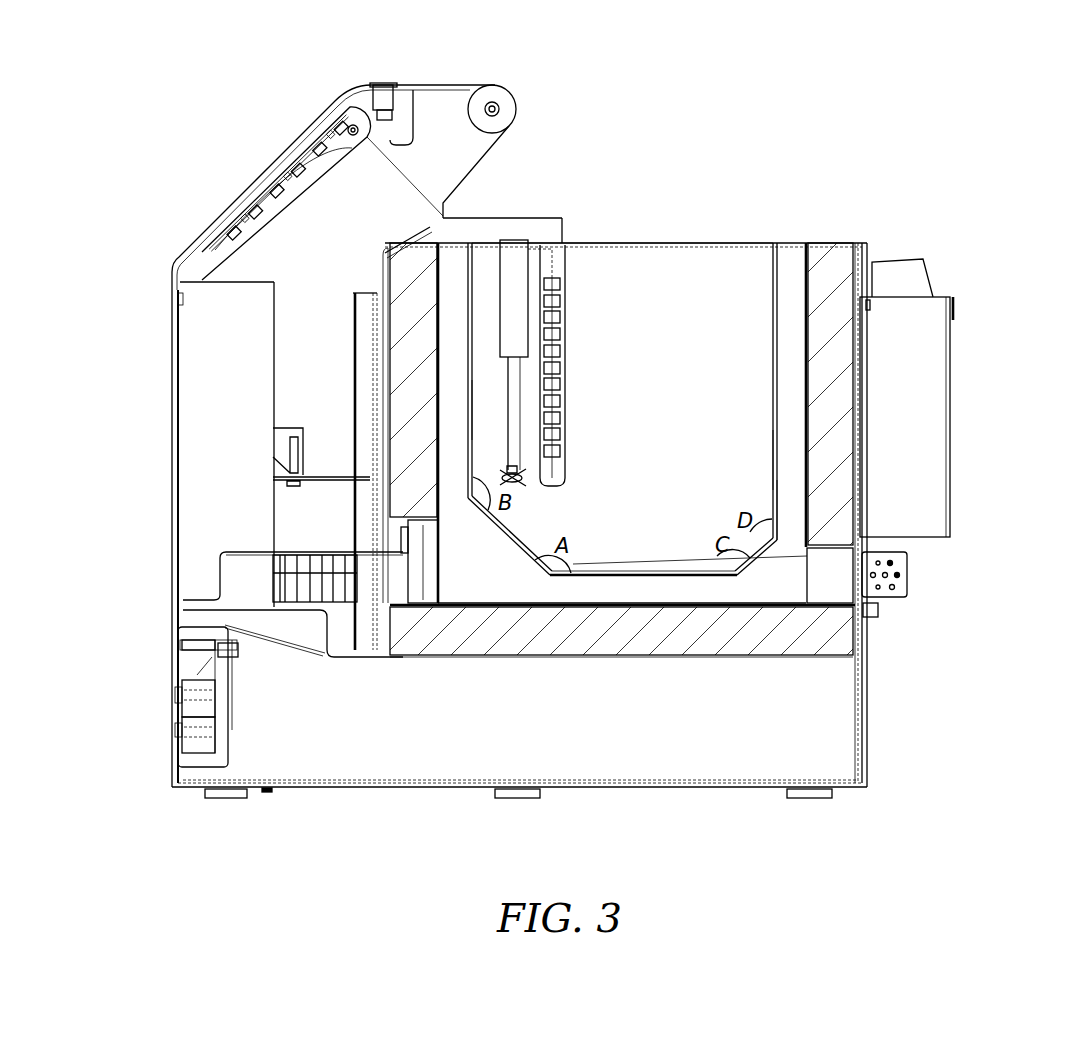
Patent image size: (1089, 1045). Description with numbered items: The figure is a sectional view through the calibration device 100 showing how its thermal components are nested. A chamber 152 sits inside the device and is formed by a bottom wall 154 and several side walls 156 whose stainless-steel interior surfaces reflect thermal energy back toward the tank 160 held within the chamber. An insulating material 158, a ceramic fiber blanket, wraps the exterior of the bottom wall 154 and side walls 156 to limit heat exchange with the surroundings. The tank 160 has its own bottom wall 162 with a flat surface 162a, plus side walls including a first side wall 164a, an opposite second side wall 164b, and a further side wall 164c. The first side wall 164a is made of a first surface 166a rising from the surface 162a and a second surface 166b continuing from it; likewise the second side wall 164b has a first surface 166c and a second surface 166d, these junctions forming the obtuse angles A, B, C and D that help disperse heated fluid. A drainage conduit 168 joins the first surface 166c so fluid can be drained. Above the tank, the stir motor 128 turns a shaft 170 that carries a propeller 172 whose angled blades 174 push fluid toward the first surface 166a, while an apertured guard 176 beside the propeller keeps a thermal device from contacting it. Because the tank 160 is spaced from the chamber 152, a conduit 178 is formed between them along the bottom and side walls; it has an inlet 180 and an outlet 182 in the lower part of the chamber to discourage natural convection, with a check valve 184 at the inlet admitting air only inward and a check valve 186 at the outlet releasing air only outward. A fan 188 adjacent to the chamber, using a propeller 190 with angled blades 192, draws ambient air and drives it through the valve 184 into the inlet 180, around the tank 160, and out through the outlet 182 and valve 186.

The calibration device 100 is at (884, 76).
The stir motor 128 is at (515, 230).
The chamber 152 is at (814, 368).
The bottom wall 154 is at (578, 606).
The side walls 156 is at (436, 302).
The insulating material 158 is at (403, 490).
The tank 160 is at (786, 443).
The bottom wall 162 is at (668, 578).
The surface 162a is at (647, 562).
The first side wall 164a is at (468, 316).
The second side wall 164b is at (780, 403).
The side wall 164c is at (673, 275).
The first surface 166a is at (516, 528).
The second surface 166b is at (483, 408).
The first surface 166c is at (746, 546).
The second surface 166d is at (768, 457).
The drainage conduit 168 is at (787, 563).
The shaft 170 is at (507, 390).
The propeller 172 is at (491, 456).
The blades 174 is at (503, 482).
The guard 176 is at (553, 264).
The conduit 178 is at (794, 500).
The inlet 180 is at (434, 566).
The outlet 182 is at (816, 595).
The valve 184 is at (420, 590).
The valve 186 is at (837, 583).
The fan 188 is at (256, 590).
The propeller 190 is at (308, 606).
The blades 192 is at (307, 587).